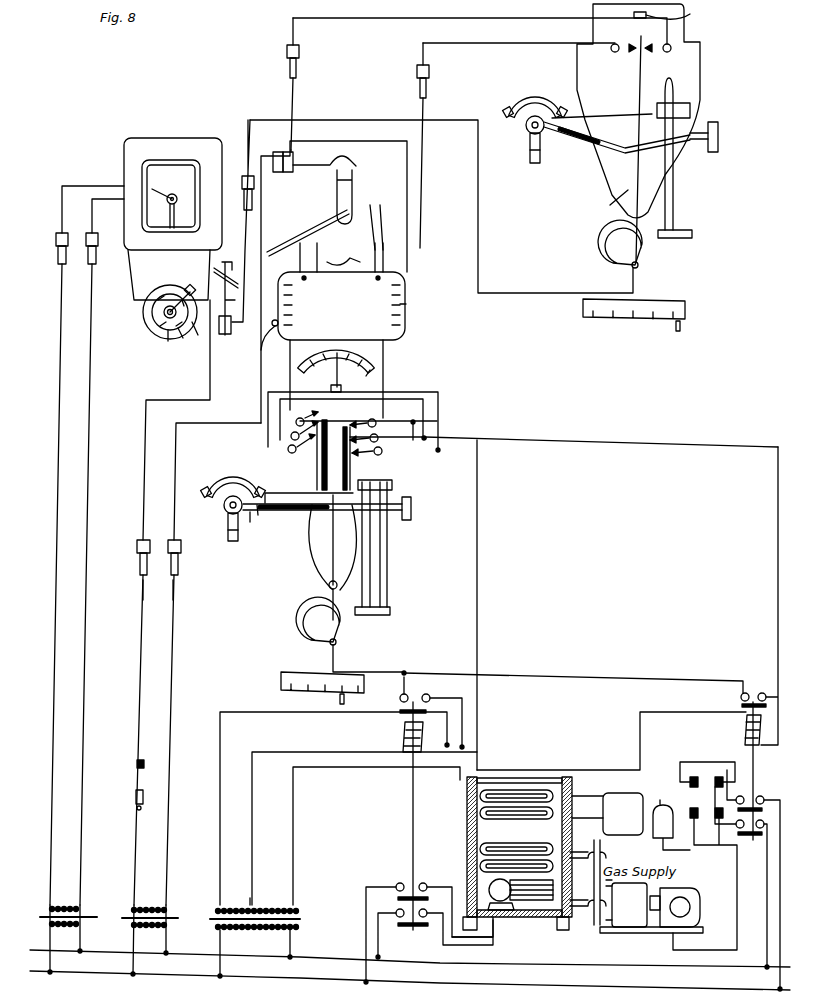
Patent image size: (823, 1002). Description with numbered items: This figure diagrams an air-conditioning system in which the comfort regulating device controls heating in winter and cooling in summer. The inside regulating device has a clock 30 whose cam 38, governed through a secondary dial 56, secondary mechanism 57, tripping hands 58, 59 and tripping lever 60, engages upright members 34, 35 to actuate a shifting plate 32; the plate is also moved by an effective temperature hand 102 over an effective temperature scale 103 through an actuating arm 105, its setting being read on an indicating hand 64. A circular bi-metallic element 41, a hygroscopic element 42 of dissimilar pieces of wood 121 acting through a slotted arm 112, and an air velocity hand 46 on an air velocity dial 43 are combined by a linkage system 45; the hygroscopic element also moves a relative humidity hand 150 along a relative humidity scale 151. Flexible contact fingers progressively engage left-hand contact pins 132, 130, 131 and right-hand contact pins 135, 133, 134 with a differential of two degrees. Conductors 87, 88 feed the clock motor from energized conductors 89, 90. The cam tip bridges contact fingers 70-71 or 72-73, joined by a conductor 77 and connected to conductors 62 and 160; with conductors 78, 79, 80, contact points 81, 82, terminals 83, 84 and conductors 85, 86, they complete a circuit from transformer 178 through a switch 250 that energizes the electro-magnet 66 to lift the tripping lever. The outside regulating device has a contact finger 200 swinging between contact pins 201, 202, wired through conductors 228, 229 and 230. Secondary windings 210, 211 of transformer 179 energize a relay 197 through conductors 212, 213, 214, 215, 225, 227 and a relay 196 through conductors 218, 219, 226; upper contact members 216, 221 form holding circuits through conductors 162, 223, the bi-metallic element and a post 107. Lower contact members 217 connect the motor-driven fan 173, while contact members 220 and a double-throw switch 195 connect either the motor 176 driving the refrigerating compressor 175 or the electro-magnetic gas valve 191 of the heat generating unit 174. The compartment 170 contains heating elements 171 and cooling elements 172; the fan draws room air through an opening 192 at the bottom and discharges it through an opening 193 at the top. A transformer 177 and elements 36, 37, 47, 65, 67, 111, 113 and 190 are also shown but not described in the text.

The clock 30 is at (185, 128).
The shifting plate 32 is at (638, 96).
The upright member 34 is at (305, 215).
The upright member 35 is at (379, 220).
The temperature scale 36 is at (304, 280).
The temperature scale 37 is at (378, 281).
The cam 38 is at (352, 198).
The circular bi-metallic element 41 is at (660, 262).
The hygroscopic element 42 is at (723, 183).
The air velocity dial 43 is at (547, 94).
The linkage system 45 is at (597, 160).
The air velocity hand 46 is at (526, 128).
The slide block 47 is at (411, 512).
The secondary dial 56 is at (161, 333).
The secondary mechanism 57 is at (208, 271).
The tripping hand 58 is at (169, 342).
The tripping hand 59 is at (183, 339).
The tripping lever 60 is at (183, 284).
The conductor 62 is at (421, 215).
The indicating hand 64 is at (274, 330).
The terminal 65 is at (405, 304).
The electro-magnet 66 is at (231, 326).
The contact 67 is at (199, 336).
The contact fingers 70-71 is at (338, 256).
The contact fingers 72-73 is at (298, 164).
The conductor 77 is at (397, 141).
The conductor 78 is at (246, 230).
The conductor 79 is at (188, 456).
The conductor 80 is at (143, 488).
The contact point 81 is at (182, 545).
The contact point 82 is at (137, 545).
The terminal 83 is at (179, 570).
The terminal 84 is at (140, 572).
The energized conductor 85 is at (173, 603).
The energized conductor 86 is at (142, 600).
The conductor 87 is at (62, 187).
The conductor 88 is at (107, 205).
The energized conductor 89 is at (59, 356).
The energized conductor 90 is at (91, 352).
The effective temperature indicating hand 102 is at (678, 333).
The effective temperature scale 103 is at (596, 320).
The actuating arm 105 is at (311, 386).
The post 107 is at (335, 562).
The pin 111 is at (250, 522).
The slotted arm 112 is at (258, 514).
The link bar 113 is at (290, 492).
The dissimilar pieces of wood 121 is at (388, 592).
The contact pin 130 is at (292, 453).
The contact pin 131 is at (318, 460).
The contact pin 132 is at (296, 419).
The contact pin 133 is at (381, 452).
The contact pin 134 is at (378, 438).
The contact pin 135 is at (350, 422).
The relative humidity indicating hand 150 is at (350, 384).
The relative humidity scale 151 is at (322, 359).
The conductor 160 is at (293, 99).
The conductor 162 is at (365, 670).
The compartment 170 is at (470, 815).
The heating elements 171 is at (475, 796).
The cooling elements 172 is at (470, 848).
The motor-driven fan 173 is at (522, 915).
The heat generating unit 174 is at (634, 822).
The refrigerating compressor 175 is at (640, 911).
The motor 176 is at (640, 915).
The transformer 177 is at (82, 912).
The transformer 178 is at (170, 914).
The transformer 179 is at (286, 916).
The supply lines 190 is at (590, 963).
The electro-magnetic gas valve 191 is at (674, 812).
The opening 192 is at (540, 918).
The opening 193 is at (515, 778).
The double-throw switch 195 is at (703, 846).
The relay 196 is at (753, 745).
The relay 197 is at (393, 745).
The contact finger 200 is at (647, 66).
The contact pin 201 is at (686, 46).
The contact pin 202 is at (612, 52).
The secondary winding 210 is at (234, 906).
The secondary winding 211 is at (273, 907).
The conductor 212 is at (220, 830).
The conductor 213 is at (421, 740).
The conductor 214 is at (476, 625).
The conductor 215 is at (478, 478).
The upper contact member 216 is at (427, 694).
The lower contact members 217 is at (400, 884).
The conductor 218 is at (255, 828).
The conductor 219 is at (776, 620).
The contact members 220 is at (756, 796).
The upper contact member 221 is at (755, 690).
The conductor 223 is at (563, 676).
The conductor 225 is at (437, 422).
The conductor 226 is at (425, 405).
The conductor 227 is at (440, 394).
The conductor 228 is at (443, 18).
The conductor 229 is at (452, 44).
The conductor 230 is at (252, 118).
The switch 250 is at (138, 762).